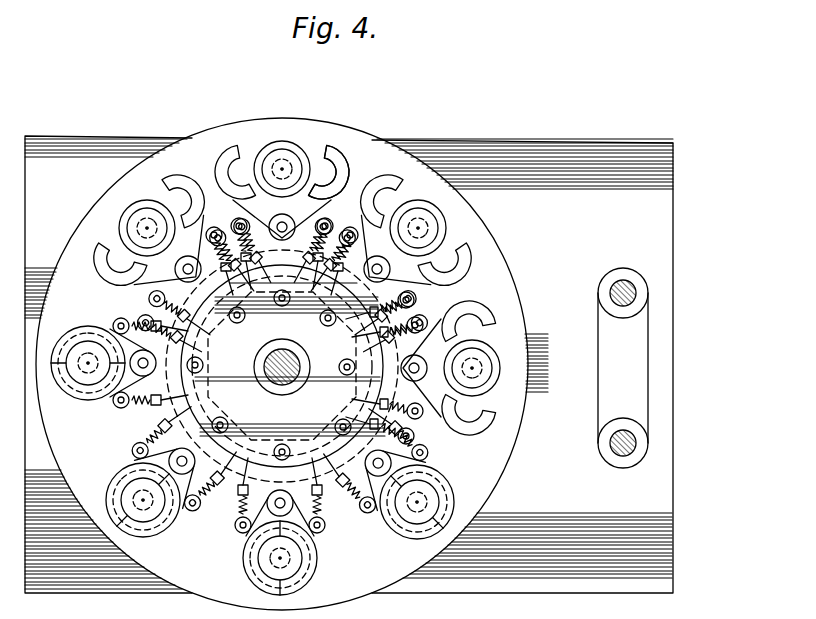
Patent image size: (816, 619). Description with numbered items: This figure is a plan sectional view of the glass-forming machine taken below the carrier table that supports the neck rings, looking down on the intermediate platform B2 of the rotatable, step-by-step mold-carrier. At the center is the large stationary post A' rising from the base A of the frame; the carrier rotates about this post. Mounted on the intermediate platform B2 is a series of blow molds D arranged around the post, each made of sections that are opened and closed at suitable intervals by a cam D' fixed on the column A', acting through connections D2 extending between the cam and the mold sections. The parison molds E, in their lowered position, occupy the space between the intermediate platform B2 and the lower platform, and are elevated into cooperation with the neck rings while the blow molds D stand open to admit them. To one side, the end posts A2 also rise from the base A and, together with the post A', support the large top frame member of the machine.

The base of the frame A is at (349, 355).
The stationary post A' is at (279, 384).
The end posts A2 is at (637, 295).
The intermediate platform B2 is at (497, 274).
The blow molds D is at (213, 276).
The cam D' is at (282, 366).
The connections D2 is at (282, 366).
The parison molds E is at (300, 140).